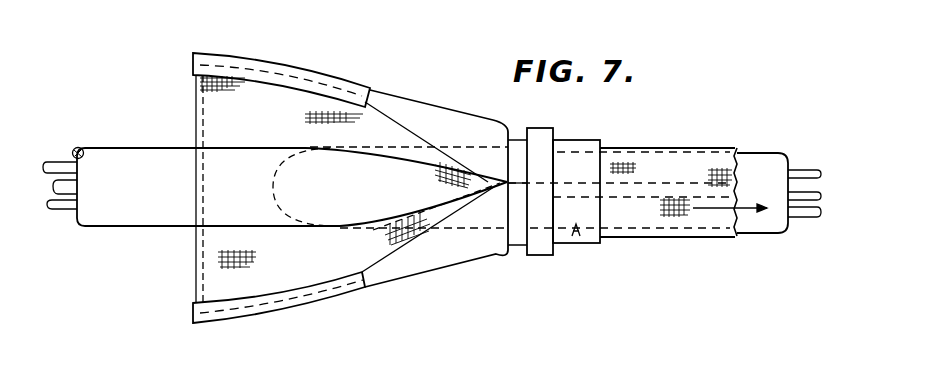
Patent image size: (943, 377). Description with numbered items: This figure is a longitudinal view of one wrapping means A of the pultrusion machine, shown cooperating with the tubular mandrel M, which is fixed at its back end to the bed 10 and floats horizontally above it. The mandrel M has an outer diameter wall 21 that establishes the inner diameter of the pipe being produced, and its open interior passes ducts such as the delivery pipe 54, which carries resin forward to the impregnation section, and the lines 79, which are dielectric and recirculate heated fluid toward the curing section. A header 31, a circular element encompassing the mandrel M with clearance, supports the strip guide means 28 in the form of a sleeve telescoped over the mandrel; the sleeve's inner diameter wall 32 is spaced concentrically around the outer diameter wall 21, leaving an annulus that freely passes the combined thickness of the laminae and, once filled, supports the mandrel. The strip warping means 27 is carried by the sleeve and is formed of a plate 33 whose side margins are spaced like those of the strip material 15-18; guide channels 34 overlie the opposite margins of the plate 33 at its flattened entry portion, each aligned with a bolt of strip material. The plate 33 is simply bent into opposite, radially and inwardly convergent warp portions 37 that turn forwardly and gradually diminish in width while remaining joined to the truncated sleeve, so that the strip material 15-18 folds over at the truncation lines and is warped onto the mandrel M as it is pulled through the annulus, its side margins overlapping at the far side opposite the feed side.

The bed 10 is at (315, 32).
The wrapping means A is at (317, 180).
The mandrel M is at (128, 220).
The outer diameter wall 21 is at (155, 147).
The lines 79 is at (65, 147).
The plate 33 is at (197, 97).
The strip warping means 27 is at (197, 295).
The guide channels 34 is at (314, 76).
The warp portions 37 is at (443, 122).
The header 31 is at (552, 128).
The inner diameter wall 32 is at (576, 237).
The strip guide means 28 is at (604, 141).
The strip material 15-18 is at (712, 150).
The delivery pipe 54 is at (810, 192).